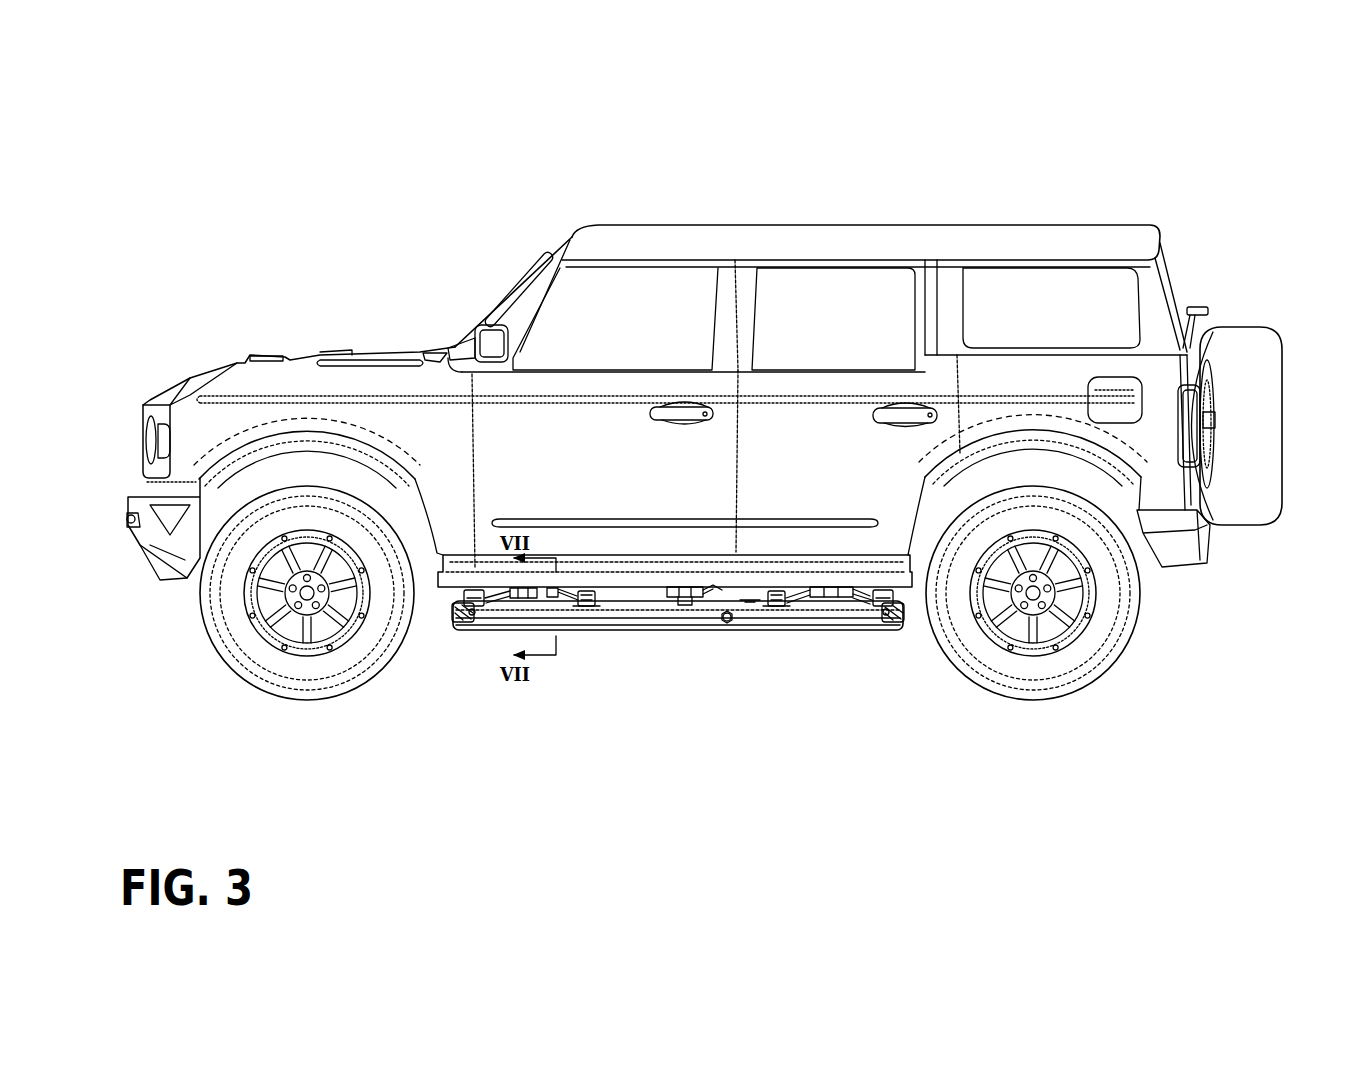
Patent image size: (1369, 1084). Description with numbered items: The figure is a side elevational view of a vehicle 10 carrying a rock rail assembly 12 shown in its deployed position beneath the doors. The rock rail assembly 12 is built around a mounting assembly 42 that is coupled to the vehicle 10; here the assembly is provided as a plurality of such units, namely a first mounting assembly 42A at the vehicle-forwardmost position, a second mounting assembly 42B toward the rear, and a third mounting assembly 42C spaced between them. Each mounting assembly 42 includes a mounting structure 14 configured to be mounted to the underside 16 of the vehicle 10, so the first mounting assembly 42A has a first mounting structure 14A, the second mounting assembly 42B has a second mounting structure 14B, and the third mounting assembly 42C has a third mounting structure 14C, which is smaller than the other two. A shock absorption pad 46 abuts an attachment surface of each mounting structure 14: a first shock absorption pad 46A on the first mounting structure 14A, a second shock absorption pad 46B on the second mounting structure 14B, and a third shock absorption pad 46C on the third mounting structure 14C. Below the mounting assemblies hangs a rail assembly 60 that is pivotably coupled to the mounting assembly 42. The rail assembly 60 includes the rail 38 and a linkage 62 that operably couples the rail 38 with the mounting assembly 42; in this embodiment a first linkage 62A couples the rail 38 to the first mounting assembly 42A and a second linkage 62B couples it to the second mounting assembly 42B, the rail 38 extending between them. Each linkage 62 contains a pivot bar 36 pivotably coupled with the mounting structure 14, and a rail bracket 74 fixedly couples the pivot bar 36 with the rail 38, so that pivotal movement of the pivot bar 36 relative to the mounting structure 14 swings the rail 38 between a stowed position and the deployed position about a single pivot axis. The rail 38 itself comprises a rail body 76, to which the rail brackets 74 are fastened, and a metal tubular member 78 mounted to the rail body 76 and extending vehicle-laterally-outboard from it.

The vehicle 10 is at (366, 320).
The rock rail assembly 12 is at (650, 640).
The mounting structure 14 is at (681, 386).
The first mounting structure 14A is at (486, 604).
The second mounting structure 14B is at (812, 586).
The third mounting structure 14C is at (669, 586).
The underside 16 is at (766, 622).
The pivot bar 36 is at (492, 607).
The rail 38 is at (727, 622).
The mounting assembly 42 is at (810, 344).
The first mounting assembly 42A is at (566, 579).
The second mounting assembly 42B is at (866, 580).
The third mounting assembly 42C is at (711, 581).
The shock absorption pad 46 is at (735, 360).
The first shock absorption pad 46A is at (511, 590).
The second shock absorption pad 46B is at (828, 586).
The third shock absorption pad 46C is at (681, 586).
The rail assembly 60 is at (621, 633).
The linkage 62 is at (680, 687).
The first linkage 62A is at (478, 626).
The second linkage 62B is at (895, 626).
The rail bracket 74 is at (468, 616).
The rail body 76 is at (681, 612).
The metal tubular member 78 is at (750, 603).